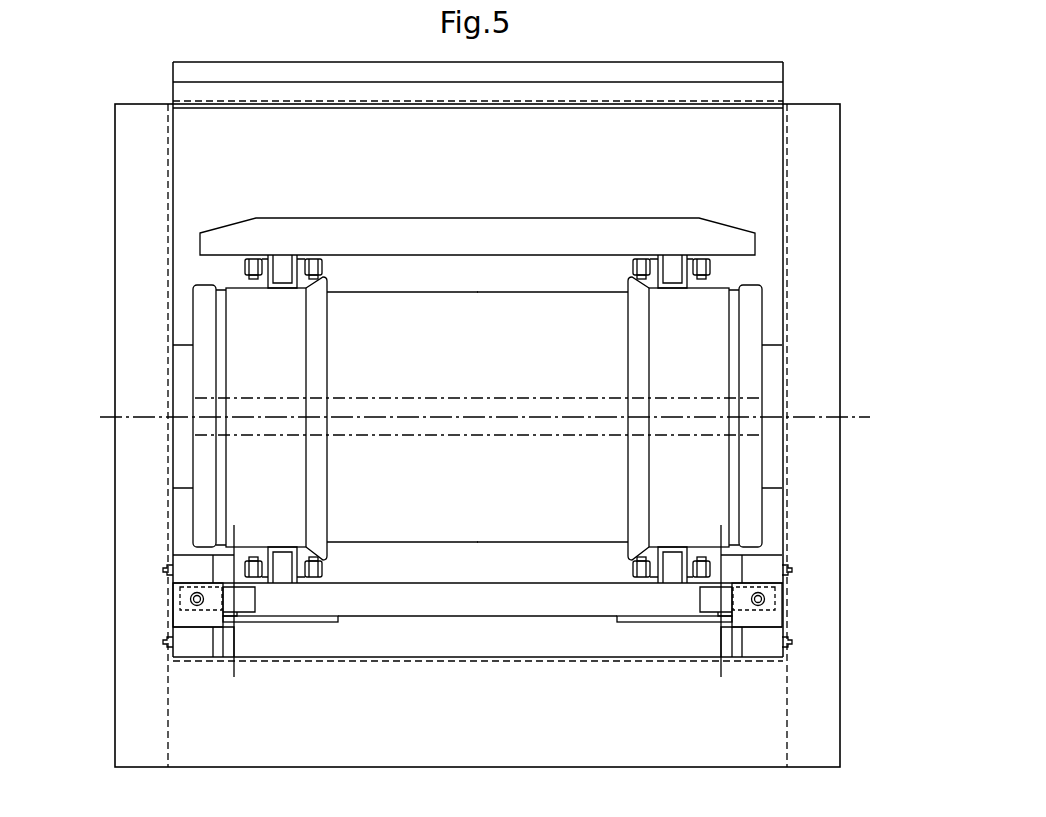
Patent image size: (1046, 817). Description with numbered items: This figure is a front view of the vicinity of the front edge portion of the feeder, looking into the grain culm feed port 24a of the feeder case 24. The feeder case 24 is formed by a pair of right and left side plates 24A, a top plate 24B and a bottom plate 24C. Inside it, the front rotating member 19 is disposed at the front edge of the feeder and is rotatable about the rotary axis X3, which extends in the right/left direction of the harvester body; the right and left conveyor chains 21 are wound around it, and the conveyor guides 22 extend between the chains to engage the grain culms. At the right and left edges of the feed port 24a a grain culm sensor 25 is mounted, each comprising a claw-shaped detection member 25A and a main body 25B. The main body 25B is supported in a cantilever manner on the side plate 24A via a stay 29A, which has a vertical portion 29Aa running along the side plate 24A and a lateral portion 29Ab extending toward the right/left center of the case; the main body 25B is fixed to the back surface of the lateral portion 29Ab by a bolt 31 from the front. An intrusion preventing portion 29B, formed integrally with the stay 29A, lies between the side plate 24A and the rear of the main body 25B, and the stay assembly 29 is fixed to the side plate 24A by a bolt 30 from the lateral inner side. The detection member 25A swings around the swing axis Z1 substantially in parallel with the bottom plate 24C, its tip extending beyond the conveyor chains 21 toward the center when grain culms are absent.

The front rotating member 19 is at (550, 292).
The conveyor chain 21 is at (285, 280).
The conveyor guide 22 is at (473, 228).
The feeder case 24 is at (845, 157).
The grain culm feed port 24a is at (784, 228).
The side plate 24A is at (163, 230).
The top plate 24B is at (370, 108).
The bottom plate 24C is at (464, 657).
The grain culm sensor 25 is at (477, 651).
The detection member 25A is at (310, 622).
The main body 25B is at (240, 600).
The fixing member 29 is at (486, 657).
The stay 29A is at (486, 660).
The vertical portion 29Aa is at (178, 588).
The lateral portion 29Ab is at (202, 617).
The intrusion preventing portion 29B is at (238, 643).
The bolt 30 is at (163, 570).
The bolt 31 is at (190, 599).
The rotary axis X3 is at (504, 419).
The swing axis Z1 is at (477, 616).